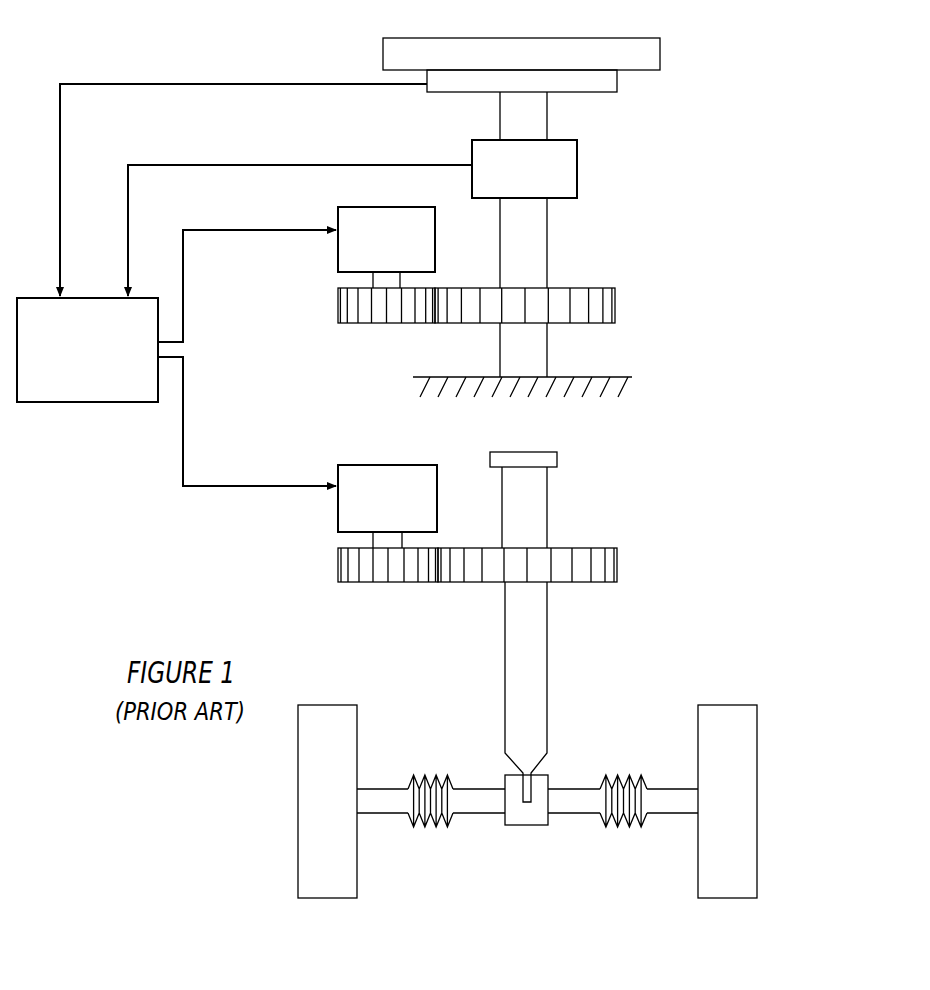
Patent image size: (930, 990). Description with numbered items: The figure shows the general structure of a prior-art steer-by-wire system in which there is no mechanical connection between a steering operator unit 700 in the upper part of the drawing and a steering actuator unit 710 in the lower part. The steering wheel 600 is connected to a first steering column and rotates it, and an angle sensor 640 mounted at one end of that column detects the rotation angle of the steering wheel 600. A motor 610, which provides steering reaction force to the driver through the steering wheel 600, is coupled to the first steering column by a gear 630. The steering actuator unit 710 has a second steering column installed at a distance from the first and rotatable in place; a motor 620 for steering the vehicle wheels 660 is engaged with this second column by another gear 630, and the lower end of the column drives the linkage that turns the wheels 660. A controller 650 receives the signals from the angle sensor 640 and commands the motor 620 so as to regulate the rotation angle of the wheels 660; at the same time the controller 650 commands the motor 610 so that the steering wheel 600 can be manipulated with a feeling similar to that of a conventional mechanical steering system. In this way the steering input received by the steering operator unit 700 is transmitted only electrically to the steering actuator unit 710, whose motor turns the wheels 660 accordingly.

The steering wheel 600 is at (650, 48).
The motor 610 is at (375, 218).
The motor 620 is at (345, 520).
The gear 630 is at (605, 296).
The angle sensor 640 is at (580, 166).
The controller 650 is at (91, 390).
The wheels 660 is at (745, 795).
The steering operator unit 700 is at (655, 242).
The steering actuator unit 710 is at (636, 678).